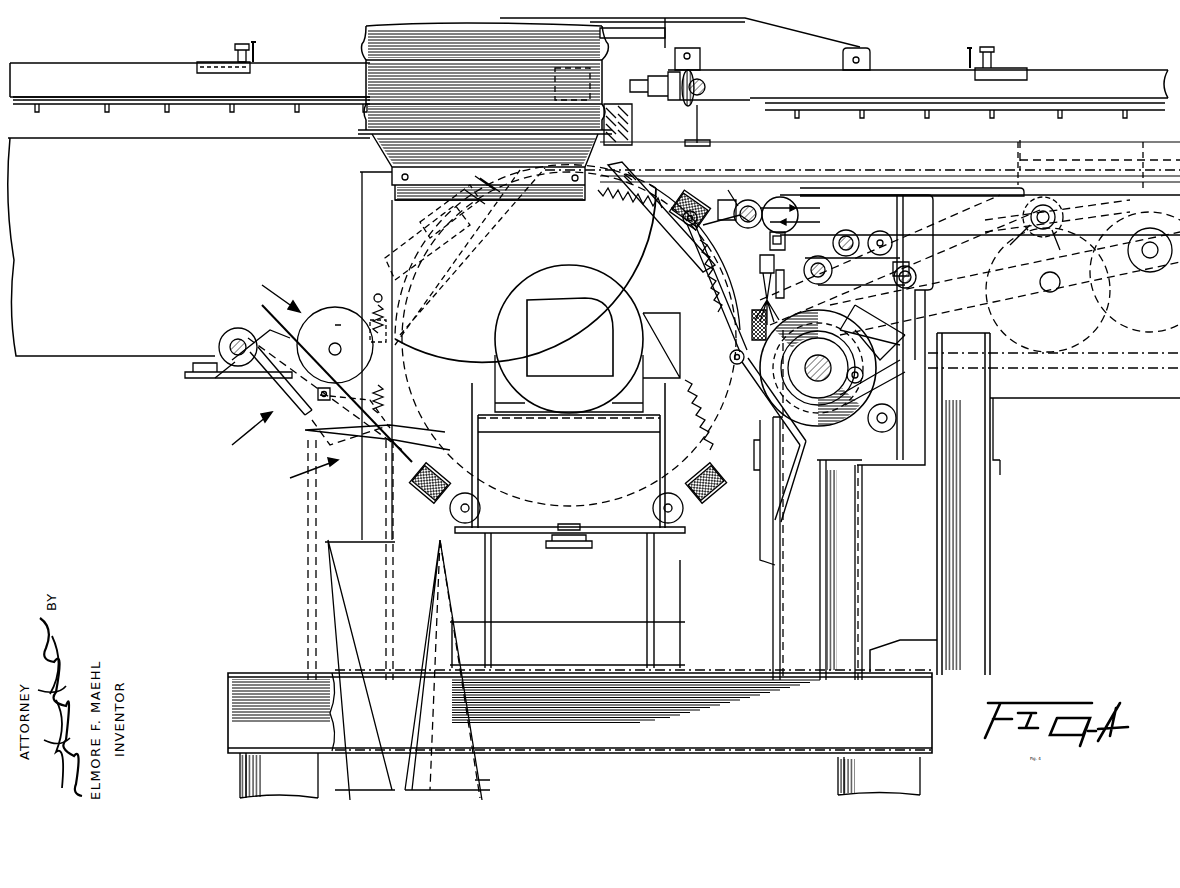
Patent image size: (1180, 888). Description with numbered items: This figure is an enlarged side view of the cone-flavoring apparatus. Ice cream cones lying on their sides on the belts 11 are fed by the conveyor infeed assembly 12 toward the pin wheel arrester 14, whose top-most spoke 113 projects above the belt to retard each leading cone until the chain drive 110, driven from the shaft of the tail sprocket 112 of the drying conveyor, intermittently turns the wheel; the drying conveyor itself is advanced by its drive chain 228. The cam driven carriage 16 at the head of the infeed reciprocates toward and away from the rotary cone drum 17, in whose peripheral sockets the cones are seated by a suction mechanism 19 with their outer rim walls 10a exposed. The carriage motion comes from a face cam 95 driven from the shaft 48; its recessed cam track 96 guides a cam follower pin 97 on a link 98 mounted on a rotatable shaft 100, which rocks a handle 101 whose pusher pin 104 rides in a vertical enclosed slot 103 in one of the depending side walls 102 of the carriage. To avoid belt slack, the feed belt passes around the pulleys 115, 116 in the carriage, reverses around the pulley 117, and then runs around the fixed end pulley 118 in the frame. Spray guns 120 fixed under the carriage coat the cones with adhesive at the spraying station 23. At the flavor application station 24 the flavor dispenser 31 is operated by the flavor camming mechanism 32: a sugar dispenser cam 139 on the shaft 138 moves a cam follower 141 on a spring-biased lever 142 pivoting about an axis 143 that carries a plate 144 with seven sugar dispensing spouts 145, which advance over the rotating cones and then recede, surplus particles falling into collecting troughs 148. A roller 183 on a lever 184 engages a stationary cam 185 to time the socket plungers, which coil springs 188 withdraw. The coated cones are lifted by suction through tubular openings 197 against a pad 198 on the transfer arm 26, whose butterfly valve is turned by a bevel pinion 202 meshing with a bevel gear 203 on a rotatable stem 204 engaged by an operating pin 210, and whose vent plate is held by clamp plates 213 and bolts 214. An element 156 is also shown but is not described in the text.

The transfer arm 26 is at (150, 65).
The bolts 214 is at (233, 58).
The clamp plates 213 is at (258, 54).
The tubular openings 197 is at (166, 110).
The cushion or pad 198 is at (322, 108).
The bevel gear 203 is at (697, 62).
The bevel pinion 202 is at (706, 82).
The rotatable stem 204 is at (673, 102).
The operating pin 210 is at (700, 122).
The rack 156 is at (624, 140).
The pulley 116 is at (735, 192).
The pulley 115 is at (752, 200).
The belts 11 is at (790, 195).
The pulley 117 is at (848, 230).
The cam driven carriage 16 is at (905, 215).
The drive chain 228 is at (1024, 148).
The top-most spoke 113 is at (1046, 200).
The tail sprocket 112 is at (1146, 146).
The stationary cam 185 is at (395, 242).
The lever 184 is at (615, 200).
The coil springs 188 is at (645, 210).
The roller 183 is at (685, 224).
The spray guns 120 is at (735, 270).
The spraying station 23 is at (780, 290).
The outer rim walls 10a is at (430, 492).
The fixed end pulley 118 is at (822, 281).
The depending side walls 102 is at (922, 238).
The vertical enclosed slot 103 is at (910, 268).
The pusher pin 104 is at (916, 280).
The pin wheel arrester 14 is at (1032, 252).
The chain drive 110 is at (1090, 248).
The flavor camming mechanism 32 is at (262, 286).
The sugar dispenser cam 139 is at (338, 310).
The shaft 138 is at (326, 324).
The axis 143 is at (232, 344).
The spring-biased lever 142 is at (248, 372).
The plate 144 is at (275, 395).
The flavor dispenser 31 is at (224, 466).
The cam follower 141 is at (300, 435).
The flavor application station 24 is at (304, 476).
The sugar dispensing spouts 145 is at (376, 470).
The face cam 95 is at (880, 345).
The handle 101 is at (900, 362).
The link 98 is at (880, 390).
The cam track 96 is at (800, 411).
The cam follower pin 97 is at (860, 435).
The rotatable shaft 100 is at (886, 425).
The shaft 48 is at (780, 420).
The cone drum 17 is at (523, 515).
The suction mechanism 19 is at (628, 500).
The conveyor infeed assembly 12 is at (1138, 390).
The collecting troughs 148 is at (490, 785).